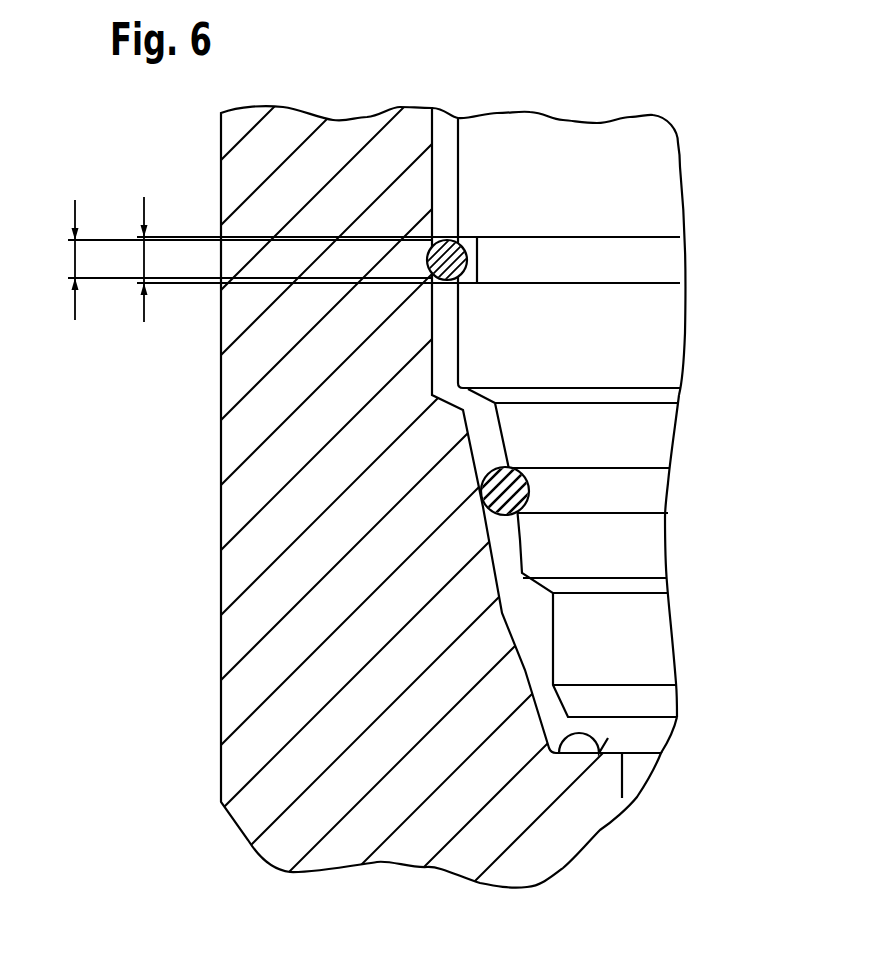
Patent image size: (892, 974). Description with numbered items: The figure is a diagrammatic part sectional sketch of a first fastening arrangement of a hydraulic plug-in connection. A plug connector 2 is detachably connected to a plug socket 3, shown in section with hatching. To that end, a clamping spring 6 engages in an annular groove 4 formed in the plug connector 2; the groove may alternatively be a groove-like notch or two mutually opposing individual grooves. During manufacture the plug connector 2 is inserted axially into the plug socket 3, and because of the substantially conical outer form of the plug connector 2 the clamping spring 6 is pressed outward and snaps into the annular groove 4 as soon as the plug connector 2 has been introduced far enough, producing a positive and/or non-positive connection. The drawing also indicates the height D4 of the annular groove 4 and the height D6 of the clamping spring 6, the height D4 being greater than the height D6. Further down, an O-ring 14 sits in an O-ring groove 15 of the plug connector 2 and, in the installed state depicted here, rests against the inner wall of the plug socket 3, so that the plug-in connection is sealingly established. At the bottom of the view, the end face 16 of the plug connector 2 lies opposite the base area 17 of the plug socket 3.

The plug connector 2 is at (655, 155).
The plug socket 3 is at (420, 820).
The annular groove 4 is at (532, 260).
The clamping spring 6 is at (465, 236).
The O-ring 14 is at (517, 467).
The O-ring groove 15 is at (565, 488).
The end face 16 is at (620, 735).
The base area 17 is at (558, 753).
The height of clamping spring D6 is at (234, 260).
The height of annular groove D4 is at (127, 259).